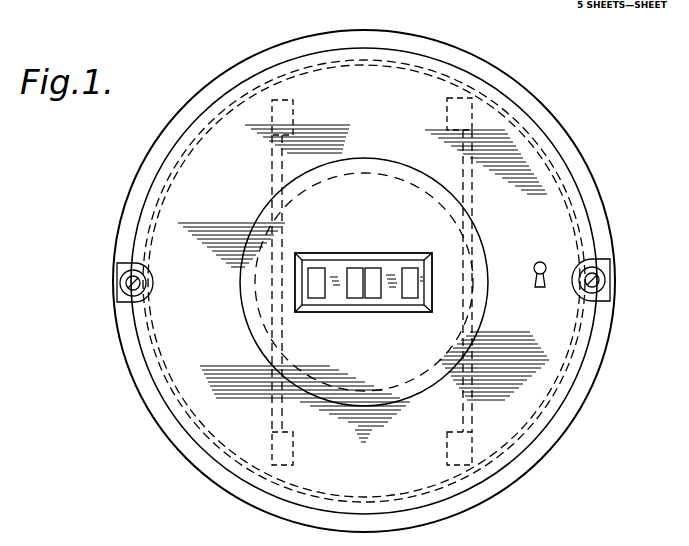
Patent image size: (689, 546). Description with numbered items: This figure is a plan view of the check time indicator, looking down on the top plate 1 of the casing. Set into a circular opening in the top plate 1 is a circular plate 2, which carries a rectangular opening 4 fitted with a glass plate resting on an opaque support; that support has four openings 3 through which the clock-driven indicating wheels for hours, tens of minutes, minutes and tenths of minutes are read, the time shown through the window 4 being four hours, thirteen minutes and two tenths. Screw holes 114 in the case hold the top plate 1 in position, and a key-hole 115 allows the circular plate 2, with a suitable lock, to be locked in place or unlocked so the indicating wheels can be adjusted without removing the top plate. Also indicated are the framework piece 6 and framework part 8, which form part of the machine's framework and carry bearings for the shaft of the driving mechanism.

The top plate 1 is at (578, 202).
The circular plate 2 is at (409, 370).
The openings 3 is at (406, 268).
The rectangular opening 4 is at (432, 296).
The framework piece 6 is at (283, 346).
The framework part 8 is at (472, 418).
The screw holes 114 is at (143, 281).
The key-hole 115 is at (541, 260).